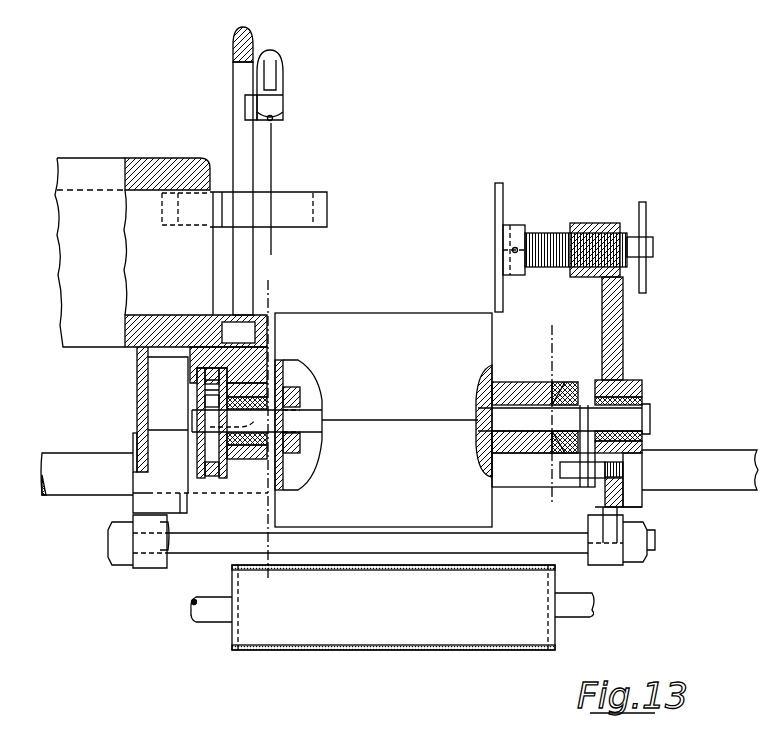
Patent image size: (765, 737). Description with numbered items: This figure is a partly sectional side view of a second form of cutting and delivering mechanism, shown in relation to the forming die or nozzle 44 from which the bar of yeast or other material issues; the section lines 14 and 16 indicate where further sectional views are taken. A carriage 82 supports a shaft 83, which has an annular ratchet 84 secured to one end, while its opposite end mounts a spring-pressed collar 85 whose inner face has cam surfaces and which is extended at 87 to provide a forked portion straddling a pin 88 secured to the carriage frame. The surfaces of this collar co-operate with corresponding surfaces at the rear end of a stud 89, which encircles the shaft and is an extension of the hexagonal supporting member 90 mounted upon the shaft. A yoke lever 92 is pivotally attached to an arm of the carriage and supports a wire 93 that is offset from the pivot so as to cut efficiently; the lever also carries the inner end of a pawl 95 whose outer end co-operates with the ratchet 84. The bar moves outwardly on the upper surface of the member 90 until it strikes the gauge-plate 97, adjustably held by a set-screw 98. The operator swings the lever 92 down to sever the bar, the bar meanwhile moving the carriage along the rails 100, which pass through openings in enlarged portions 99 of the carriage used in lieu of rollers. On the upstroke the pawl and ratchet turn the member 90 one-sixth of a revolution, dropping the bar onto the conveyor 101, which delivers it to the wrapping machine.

The section line 14- 14 is at (285, 288).
The section line 16- 16 is at (520, 328).
The forming die or nozzle 44 is at (136, 159).
The carriage 82 is at (622, 332).
The shaft 83 is at (495, 417).
The annular ratchet 84 is at (210, 482).
The spring-pressed collar 85 is at (553, 388).
The forked portion extension 87 is at (570, 487).
The pin 88 is at (615, 470).
The stud 89 is at (512, 383).
The hexagonal supporting member 90 is at (377, 330).
The yoke lever 92 is at (250, 280).
The wire 93 is at (274, 257).
The pawl 95 is at (205, 372).
The gauge-plate 97 is at (497, 183).
The set-screw 98 is at (548, 240).
The enlarged portions 99 is at (633, 472).
The rails 100 is at (722, 455).
The conveyor 101 is at (400, 565).